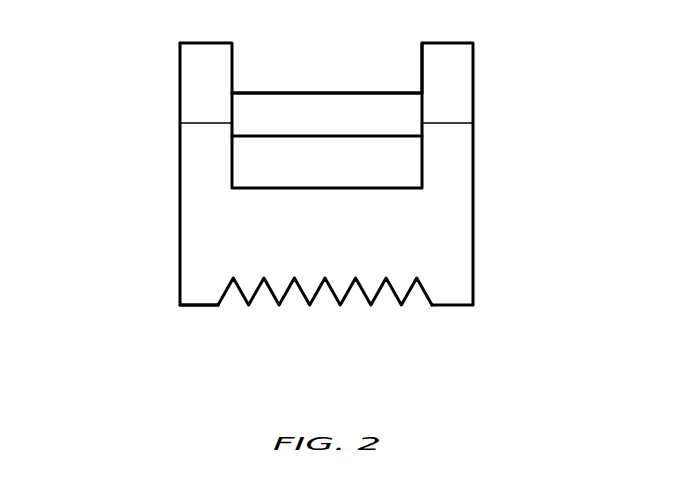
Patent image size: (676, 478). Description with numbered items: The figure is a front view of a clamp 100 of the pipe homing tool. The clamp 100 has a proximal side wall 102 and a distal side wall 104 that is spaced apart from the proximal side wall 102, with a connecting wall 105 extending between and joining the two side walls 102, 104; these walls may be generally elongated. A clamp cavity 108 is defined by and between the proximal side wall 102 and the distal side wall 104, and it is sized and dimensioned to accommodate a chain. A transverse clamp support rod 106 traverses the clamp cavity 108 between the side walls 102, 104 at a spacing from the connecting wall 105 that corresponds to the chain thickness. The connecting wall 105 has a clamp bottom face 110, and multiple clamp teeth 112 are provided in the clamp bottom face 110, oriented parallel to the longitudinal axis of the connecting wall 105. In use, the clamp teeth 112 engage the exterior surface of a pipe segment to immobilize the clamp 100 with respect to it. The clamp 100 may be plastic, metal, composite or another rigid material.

The clamp 100 is at (150, 78).
The proximal side wall 102 is at (180, 165).
The distal side wall 104 is at (473, 142).
The connecting wall 105 is at (342, 203).
The transverse clamp support rod 106 is at (358, 105).
The clamp cavity 108 is at (320, 166).
The clamp bottom face 110 is at (200, 305).
The clamp teeth 112 is at (343, 292).